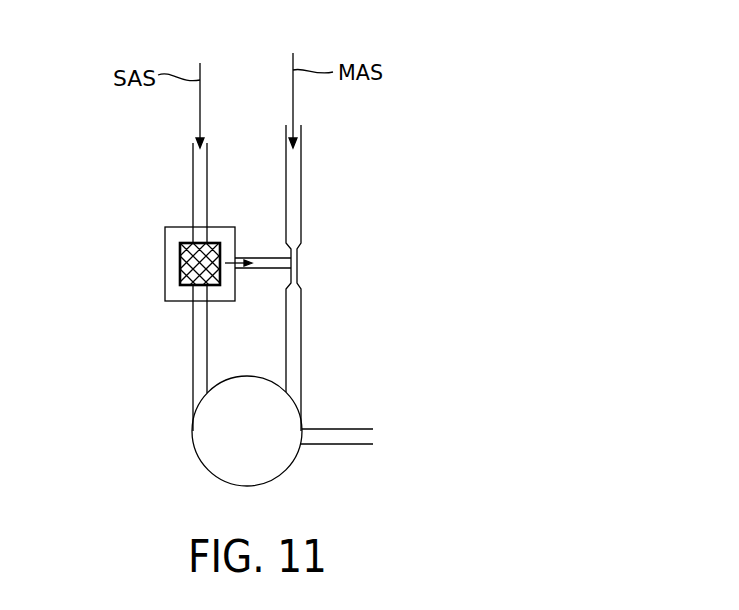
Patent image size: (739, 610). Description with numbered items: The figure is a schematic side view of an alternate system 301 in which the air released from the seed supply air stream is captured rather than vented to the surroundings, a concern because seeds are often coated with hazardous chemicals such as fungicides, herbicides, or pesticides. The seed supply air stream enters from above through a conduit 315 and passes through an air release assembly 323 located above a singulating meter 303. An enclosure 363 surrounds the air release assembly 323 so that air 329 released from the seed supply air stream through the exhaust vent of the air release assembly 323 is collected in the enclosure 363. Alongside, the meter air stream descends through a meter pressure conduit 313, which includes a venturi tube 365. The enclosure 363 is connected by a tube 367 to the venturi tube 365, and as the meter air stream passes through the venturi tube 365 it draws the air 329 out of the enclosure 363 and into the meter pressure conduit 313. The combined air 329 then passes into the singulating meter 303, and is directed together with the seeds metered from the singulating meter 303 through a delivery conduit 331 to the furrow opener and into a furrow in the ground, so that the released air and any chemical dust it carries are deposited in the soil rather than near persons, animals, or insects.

The system 301 is at (377, 129).
The singulating meter 303 is at (273, 483).
The meter pressure conduit 313 is at (300, 177).
The sample aerosol (SAS) conduit 315 is at (207, 170).
The air release assembly 323 is at (180, 272).
The air 329 is at (238, 257).
The delivery conduit 331 is at (335, 429).
The enclosure 363 is at (165, 240).
The venturi tube 365 is at (297, 274).
The tube 367 is at (263, 269).